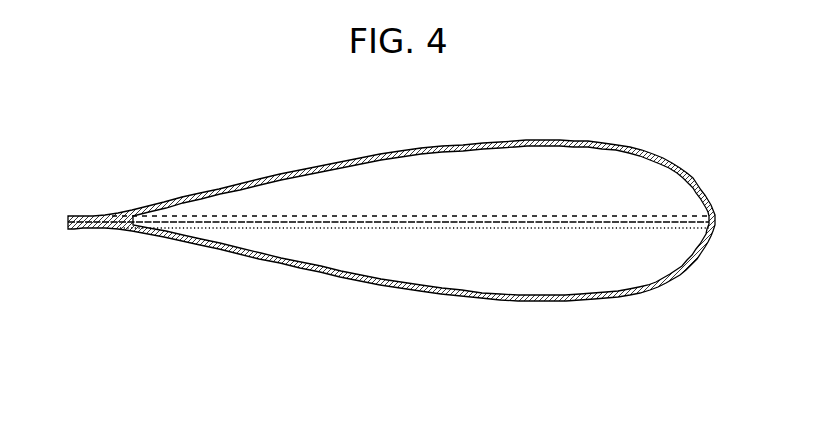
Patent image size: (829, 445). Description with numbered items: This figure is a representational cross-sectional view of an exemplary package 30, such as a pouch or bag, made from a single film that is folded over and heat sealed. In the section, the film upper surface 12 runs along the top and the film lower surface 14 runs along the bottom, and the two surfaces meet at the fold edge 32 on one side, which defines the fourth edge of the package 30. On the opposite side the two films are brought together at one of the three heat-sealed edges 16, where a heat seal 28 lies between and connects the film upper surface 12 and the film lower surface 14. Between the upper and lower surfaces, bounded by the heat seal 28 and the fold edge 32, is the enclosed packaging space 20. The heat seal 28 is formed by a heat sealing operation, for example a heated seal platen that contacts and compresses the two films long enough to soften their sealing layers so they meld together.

The film upper surface 12 is at (509, 142).
The film lower surface 14 is at (473, 300).
The edges 16 is at (88, 218).
The packaging space 20 is at (458, 197).
The heat seal 28 is at (88, 228).
The package 30 is at (312, 143).
The fold edge 32 is at (714, 220).